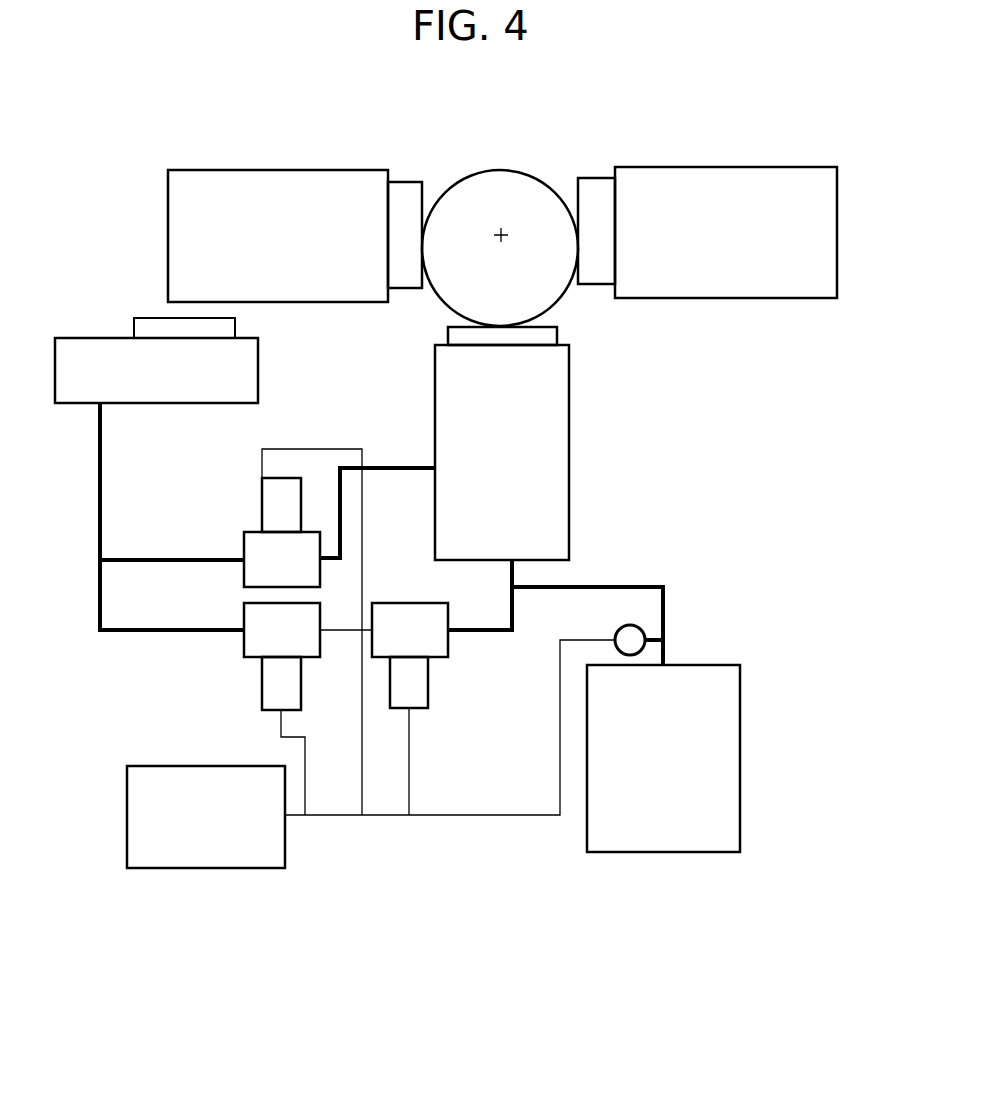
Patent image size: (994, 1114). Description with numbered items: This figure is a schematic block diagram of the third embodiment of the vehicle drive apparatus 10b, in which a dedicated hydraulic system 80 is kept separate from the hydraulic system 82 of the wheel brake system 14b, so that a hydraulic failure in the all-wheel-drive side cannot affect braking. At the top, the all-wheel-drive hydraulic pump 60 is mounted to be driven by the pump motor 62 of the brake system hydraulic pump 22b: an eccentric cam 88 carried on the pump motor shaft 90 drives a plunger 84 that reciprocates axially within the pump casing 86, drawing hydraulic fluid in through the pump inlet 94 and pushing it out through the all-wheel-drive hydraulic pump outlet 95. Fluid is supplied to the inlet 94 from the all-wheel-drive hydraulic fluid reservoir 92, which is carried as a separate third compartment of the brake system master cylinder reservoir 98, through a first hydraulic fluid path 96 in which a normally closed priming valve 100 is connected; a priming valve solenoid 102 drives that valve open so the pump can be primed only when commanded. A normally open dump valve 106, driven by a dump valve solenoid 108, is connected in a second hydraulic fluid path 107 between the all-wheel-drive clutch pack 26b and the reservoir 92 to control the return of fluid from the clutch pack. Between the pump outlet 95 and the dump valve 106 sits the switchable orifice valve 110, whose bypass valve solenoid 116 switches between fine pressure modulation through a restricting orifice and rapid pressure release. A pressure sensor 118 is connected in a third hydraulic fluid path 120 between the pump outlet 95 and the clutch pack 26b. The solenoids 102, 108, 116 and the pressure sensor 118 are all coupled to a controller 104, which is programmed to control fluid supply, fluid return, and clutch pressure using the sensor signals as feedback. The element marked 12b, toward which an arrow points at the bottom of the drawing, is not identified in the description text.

The brake system hydraulic pump 22b is at (521, 205).
The hydraulic system 82 is at (744, 183).
The wheel brake system 14b is at (820, 166).
The pump motor 62 is at (525, 185).
The pump motor shaft 90 is at (503, 232).
The eccentric cam 88 is at (502, 244).
The plunger 84 is at (543, 336).
The all-wheel-drive hydraulic pump 60 is at (545, 452).
The pump casing 86 is at (552, 453).
The vehicle drive apparatus 10b is at (613, 452).
The all-wheel-drive hydraulic fluid reservoir 92 is at (156, 315).
The brake system master cylinder reservoir 98 is at (118, 337).
The first hydraulic fluid path 96 is at (140, 558).
The second hydraulic fluid path 107 is at (105, 633).
The priming valve 100 is at (243, 530).
The priming valve solenoid 102 is at (298, 478).
The pump inlet 94 is at (437, 468).
The dump valve 106 is at (243, 658).
The dump valve solenoid 108 is at (270, 685).
The switchable orifice valve 110 is at (405, 602).
The bypass valve solenoid 116 is at (417, 682).
The all-wheel-drive hydraulic pump outlet 95 is at (512, 560).
The third hydraulic fluid path 120 is at (607, 583).
The dedicated hydraulic system 80 is at (697, 585).
The pressure sensor 118 is at (633, 640).
The all-wheel-drive clutch pack 26b is at (697, 682).
The supply unit 12b is at (688, 791).
The controller 104 is at (148, 800).